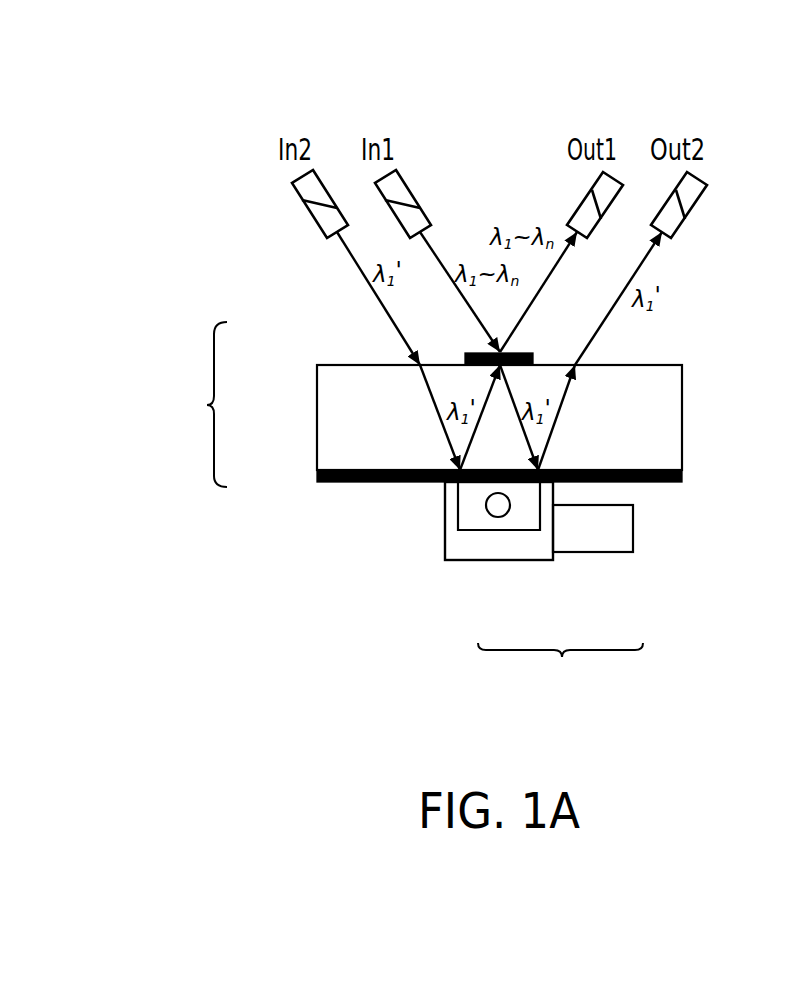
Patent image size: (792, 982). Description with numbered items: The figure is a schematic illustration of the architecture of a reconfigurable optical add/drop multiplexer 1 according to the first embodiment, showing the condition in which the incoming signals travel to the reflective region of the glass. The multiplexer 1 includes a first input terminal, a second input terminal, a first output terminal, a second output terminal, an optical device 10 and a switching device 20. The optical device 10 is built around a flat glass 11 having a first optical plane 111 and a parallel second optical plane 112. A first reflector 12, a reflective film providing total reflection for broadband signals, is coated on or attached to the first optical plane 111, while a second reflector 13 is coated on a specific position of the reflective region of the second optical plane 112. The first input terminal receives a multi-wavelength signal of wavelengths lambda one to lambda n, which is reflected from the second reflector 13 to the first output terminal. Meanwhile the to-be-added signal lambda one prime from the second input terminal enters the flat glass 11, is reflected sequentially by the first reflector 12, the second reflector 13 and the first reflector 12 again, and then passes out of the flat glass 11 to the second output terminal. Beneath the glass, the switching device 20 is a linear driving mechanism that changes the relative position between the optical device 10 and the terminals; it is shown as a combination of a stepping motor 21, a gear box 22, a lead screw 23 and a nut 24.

The reconfigurable optical add/drop multiplexer 1 is at (201, 108).
The optical device 10 is at (199, 404).
The flat glass 11 is at (325, 414).
The first reflector 12 is at (345, 482).
The second reflector 13 is at (466, 353).
The first optical plane 111 is at (657, 470).
The second optical plane 112 is at (657, 365).
The switching device 20 is at (560, 673).
The stepping motor 21 is at (605, 547).
The gear box 22 is at (538, 548).
The lead screw 23 is at (497, 517).
The nut 24 is at (518, 520).